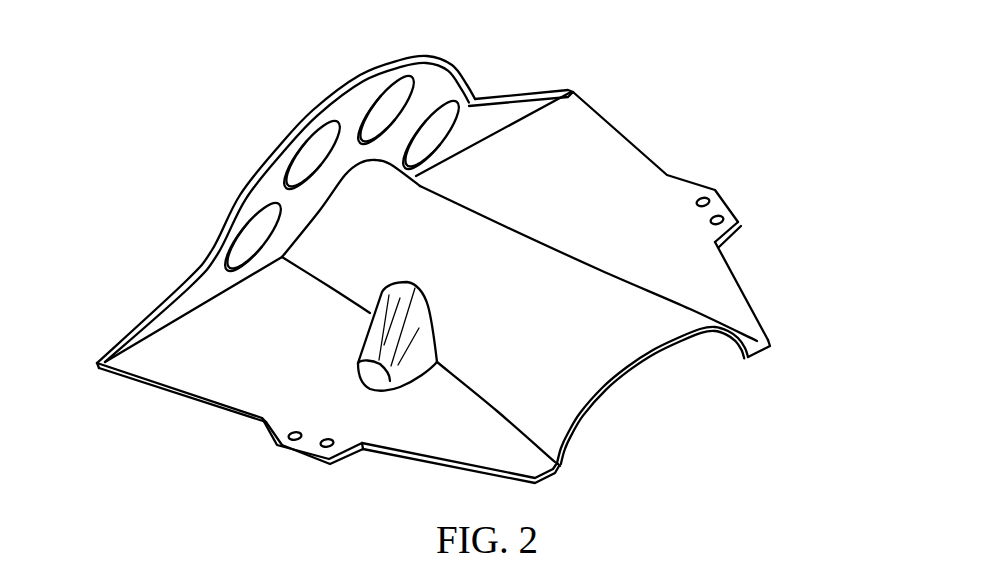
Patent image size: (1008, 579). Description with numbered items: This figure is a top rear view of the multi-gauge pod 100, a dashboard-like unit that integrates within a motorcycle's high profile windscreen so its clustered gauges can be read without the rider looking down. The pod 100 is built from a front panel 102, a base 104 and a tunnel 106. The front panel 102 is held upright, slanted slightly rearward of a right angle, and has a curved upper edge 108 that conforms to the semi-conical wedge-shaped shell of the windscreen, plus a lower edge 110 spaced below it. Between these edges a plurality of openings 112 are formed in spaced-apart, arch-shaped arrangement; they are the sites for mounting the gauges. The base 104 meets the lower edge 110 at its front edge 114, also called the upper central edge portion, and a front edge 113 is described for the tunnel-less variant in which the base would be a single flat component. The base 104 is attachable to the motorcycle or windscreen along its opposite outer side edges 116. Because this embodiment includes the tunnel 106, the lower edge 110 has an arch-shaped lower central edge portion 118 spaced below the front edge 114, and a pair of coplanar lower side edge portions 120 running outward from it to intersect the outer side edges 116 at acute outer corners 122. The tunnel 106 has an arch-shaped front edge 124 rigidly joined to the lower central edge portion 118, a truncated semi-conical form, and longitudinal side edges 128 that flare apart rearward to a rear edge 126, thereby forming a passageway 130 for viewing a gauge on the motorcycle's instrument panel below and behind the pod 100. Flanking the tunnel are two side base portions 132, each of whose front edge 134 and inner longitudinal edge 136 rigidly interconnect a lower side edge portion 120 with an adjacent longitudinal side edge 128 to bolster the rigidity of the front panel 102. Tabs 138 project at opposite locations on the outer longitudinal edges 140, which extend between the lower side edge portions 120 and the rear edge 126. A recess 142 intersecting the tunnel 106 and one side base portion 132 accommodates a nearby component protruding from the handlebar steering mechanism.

The multi-gauge pod 100 is at (239, 17).
The front panel 102 is at (214, 206).
The base 104 is at (672, 171).
The tunnel 106 is at (545, 228).
The upper edge 108 is at (458, 55).
The lower edge 110 is at (207, 301).
The openings 112 is at (443, 100).
The front edge 113 is at (139, 348).
The front edge 114 is at (313, 110).
The outer side edges 116 is at (545, 92).
The lower central edge portion 118 is at (352, 160).
The lower side edge portions 120 is at (481, 144).
The outer corners 122 is at (573, 93).
The front edge 124 is at (302, 200).
The rear edge 126 is at (638, 361).
The longitudinal side edges 128 is at (715, 347).
The passageway 130 is at (625, 396).
The side base portions 132 is at (633, 155).
The front edge 134 is at (490, 100).
The inner longitudinal edge 136 is at (757, 342).
The tabs 138 is at (715, 205).
The outer longitudinal edges 140 is at (735, 270).
The recess 142 is at (368, 330).